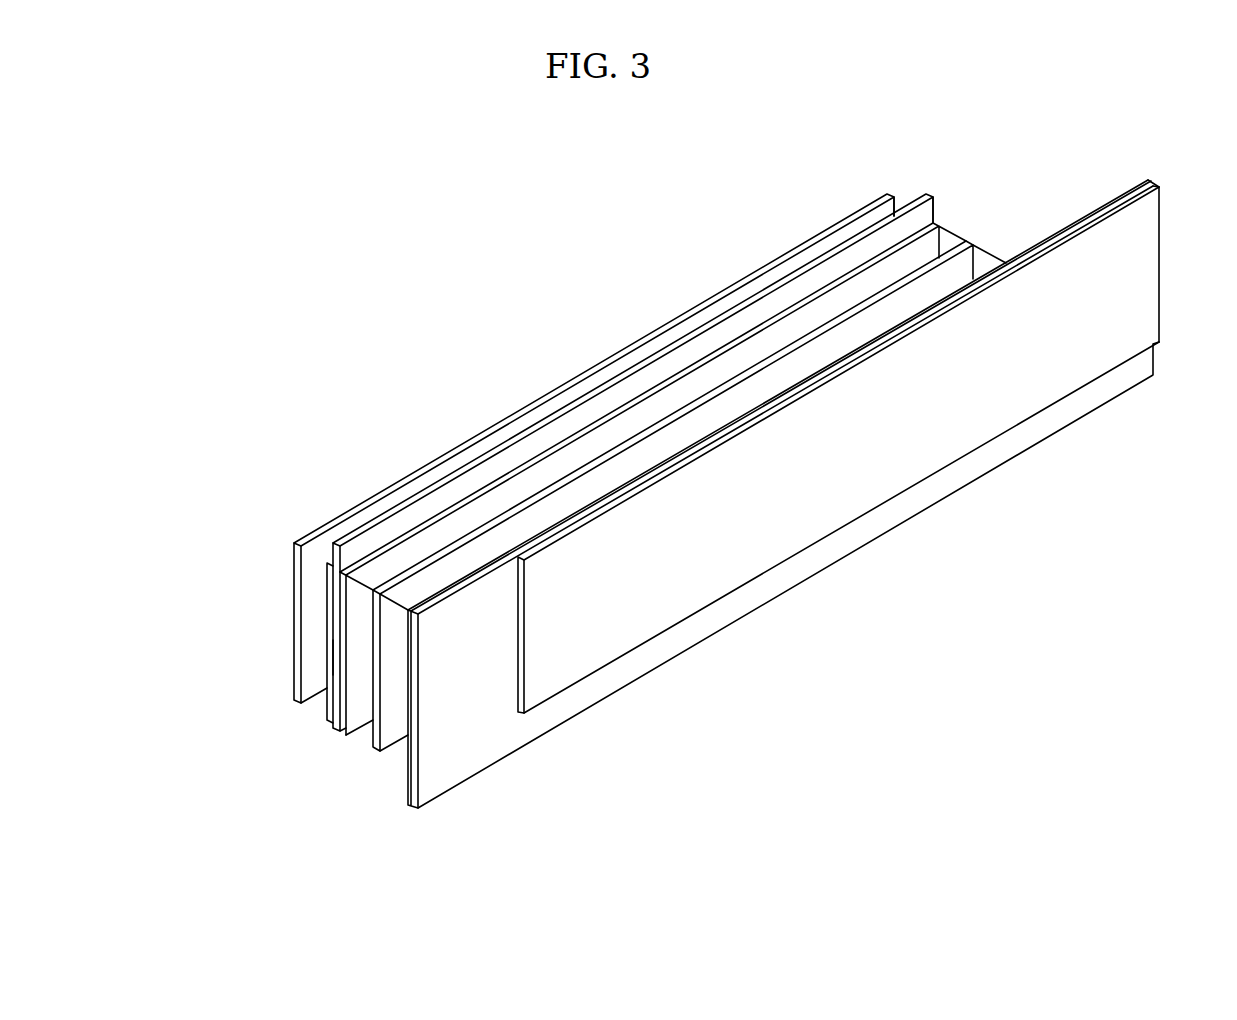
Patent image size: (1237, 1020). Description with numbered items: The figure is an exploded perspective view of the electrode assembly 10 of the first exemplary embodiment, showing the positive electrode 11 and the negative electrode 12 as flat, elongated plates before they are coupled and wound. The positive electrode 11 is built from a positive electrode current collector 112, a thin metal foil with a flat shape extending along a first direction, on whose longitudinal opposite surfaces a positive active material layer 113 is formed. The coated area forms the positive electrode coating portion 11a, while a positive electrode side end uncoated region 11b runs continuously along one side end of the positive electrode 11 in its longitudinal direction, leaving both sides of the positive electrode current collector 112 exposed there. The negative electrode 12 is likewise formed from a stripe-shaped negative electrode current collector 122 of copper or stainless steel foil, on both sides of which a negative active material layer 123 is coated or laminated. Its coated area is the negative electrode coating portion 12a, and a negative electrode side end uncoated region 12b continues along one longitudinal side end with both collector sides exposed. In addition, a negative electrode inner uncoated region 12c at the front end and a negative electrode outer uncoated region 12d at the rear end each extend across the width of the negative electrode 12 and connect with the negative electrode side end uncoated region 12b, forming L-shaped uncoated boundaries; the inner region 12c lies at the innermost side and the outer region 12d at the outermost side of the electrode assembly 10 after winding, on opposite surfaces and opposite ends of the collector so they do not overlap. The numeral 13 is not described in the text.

The electrode assembly 10 is at (648, 168).
The positive electrode 11 is at (915, 196).
The positive electrode coating portion 11a is at (593, 443).
The positive electrode side end uncoated region 11b is at (680, 360).
The positive electrode current collector 112 is at (330, 707).
The positive active material layer 113 is at (342, 647).
The negative electrode current collector 122 is at (910, 323).
The negative active material layer 123 is at (830, 377).
The negative electrode 12 is at (1031, 241).
The negative electrode coating portion 12a is at (835, 495).
The negative electrode side end uncoated region 12b is at (735, 608).
The negative electrode inner uncoated region 12c is at (470, 734).
The negative electrode outer uncoated region 12d is at (1110, 200).
The heat transfer plate 13 is at (510, 512).